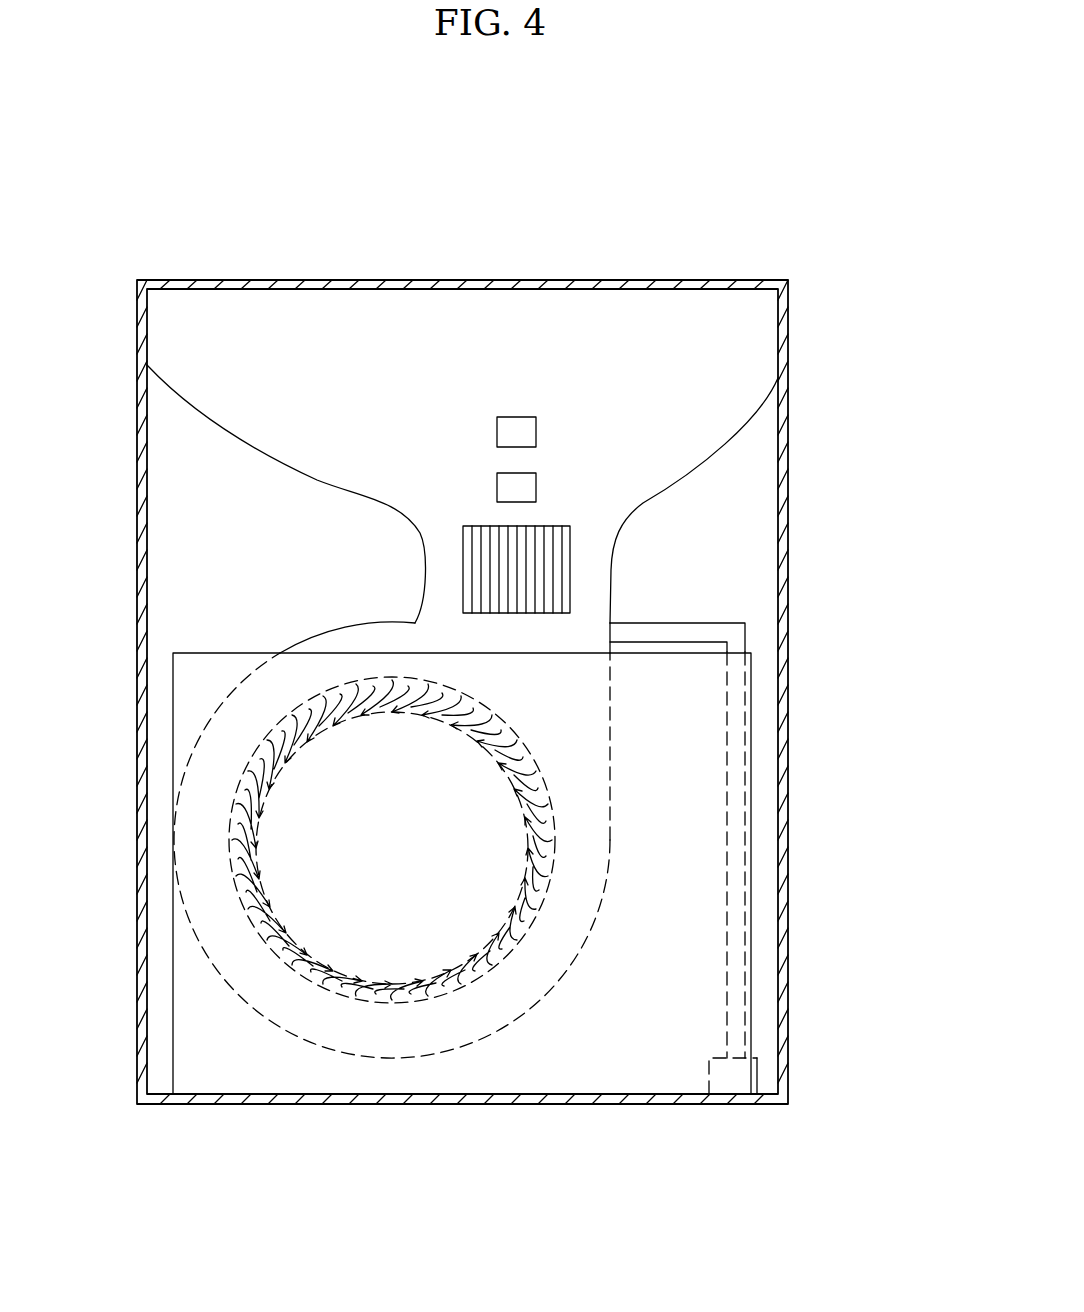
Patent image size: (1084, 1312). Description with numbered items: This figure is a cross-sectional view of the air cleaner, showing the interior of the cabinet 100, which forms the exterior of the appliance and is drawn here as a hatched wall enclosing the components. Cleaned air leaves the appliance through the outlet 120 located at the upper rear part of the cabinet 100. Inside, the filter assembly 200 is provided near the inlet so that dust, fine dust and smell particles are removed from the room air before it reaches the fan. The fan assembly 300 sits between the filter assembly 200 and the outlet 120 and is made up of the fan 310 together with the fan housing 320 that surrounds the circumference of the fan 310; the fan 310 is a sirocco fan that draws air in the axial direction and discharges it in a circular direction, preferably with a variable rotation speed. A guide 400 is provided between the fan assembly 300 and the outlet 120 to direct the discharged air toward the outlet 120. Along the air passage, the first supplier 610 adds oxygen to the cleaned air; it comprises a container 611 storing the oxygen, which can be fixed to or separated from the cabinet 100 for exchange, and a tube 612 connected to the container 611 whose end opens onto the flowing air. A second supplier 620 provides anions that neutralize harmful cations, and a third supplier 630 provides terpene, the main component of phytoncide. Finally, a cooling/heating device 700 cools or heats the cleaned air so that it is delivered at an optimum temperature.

The cabinet 100 is at (778, 588).
The outlet 120 is at (472, 290).
The filter assembly 200 is at (245, 1070).
The fan assembly 300 is at (392, 925).
The fan 310 is at (407, 990).
The fan housing 320 is at (513, 1017).
The guide 400 is at (237, 443).
The first supplier 610 is at (781, 858).
The container 611 is at (798, 1076).
The tube 612 is at (744, 975).
The second supplier 620 is at (530, 485).
The third supplier 630 is at (517, 423).
The cooling/heating device 700 is at (567, 571).